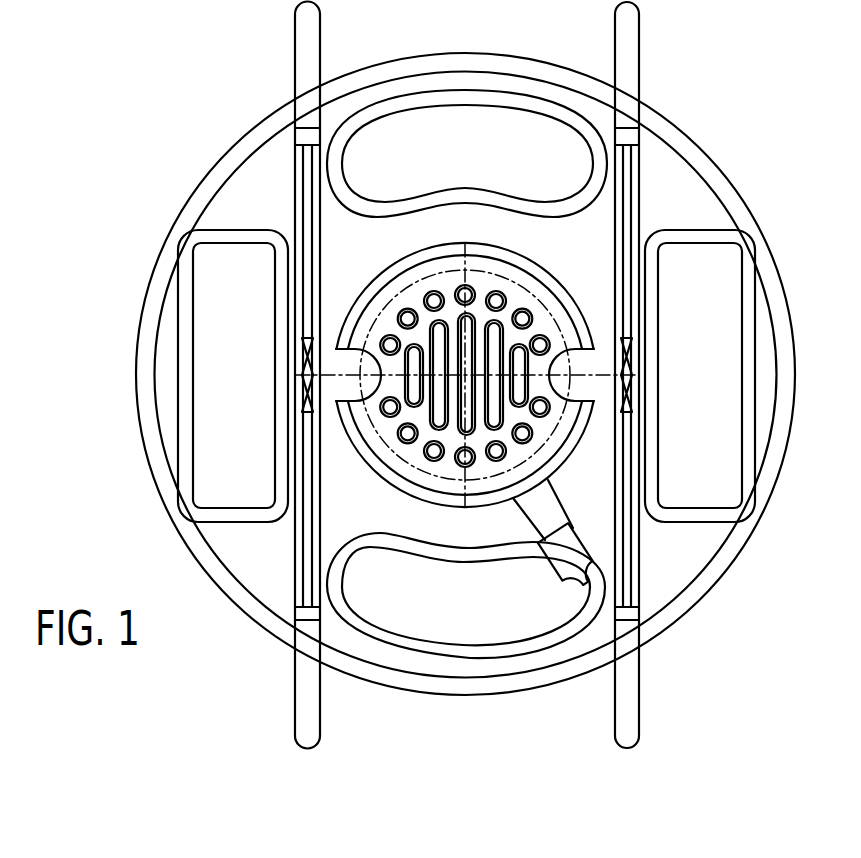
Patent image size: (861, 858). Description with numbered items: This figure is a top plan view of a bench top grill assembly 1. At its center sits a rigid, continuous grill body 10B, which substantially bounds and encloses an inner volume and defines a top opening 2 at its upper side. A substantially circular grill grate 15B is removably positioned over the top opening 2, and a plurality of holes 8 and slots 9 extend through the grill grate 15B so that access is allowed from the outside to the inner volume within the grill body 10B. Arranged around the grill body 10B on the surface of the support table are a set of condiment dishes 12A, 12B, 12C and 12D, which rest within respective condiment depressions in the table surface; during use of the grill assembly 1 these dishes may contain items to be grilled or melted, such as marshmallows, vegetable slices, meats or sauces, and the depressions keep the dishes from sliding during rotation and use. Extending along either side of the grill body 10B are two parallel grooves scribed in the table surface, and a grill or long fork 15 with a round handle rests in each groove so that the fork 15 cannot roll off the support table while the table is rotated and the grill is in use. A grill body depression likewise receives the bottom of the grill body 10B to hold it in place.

The bench top grill assembly 1 is at (177, 170).
The top opening 2 is at (522, 275).
The holes 8 is at (530, 310).
The slots 9 is at (403, 343).
The grill body 10B is at (393, 270).
The condiment dish 12A is at (180, 358).
The condiment dish 12B is at (732, 402).
The condiment dish 12C is at (502, 650).
The condiment dish 12D is at (462, 92).
The fork 15 is at (300, 65).
The circular grill grate 15B is at (545, 298).